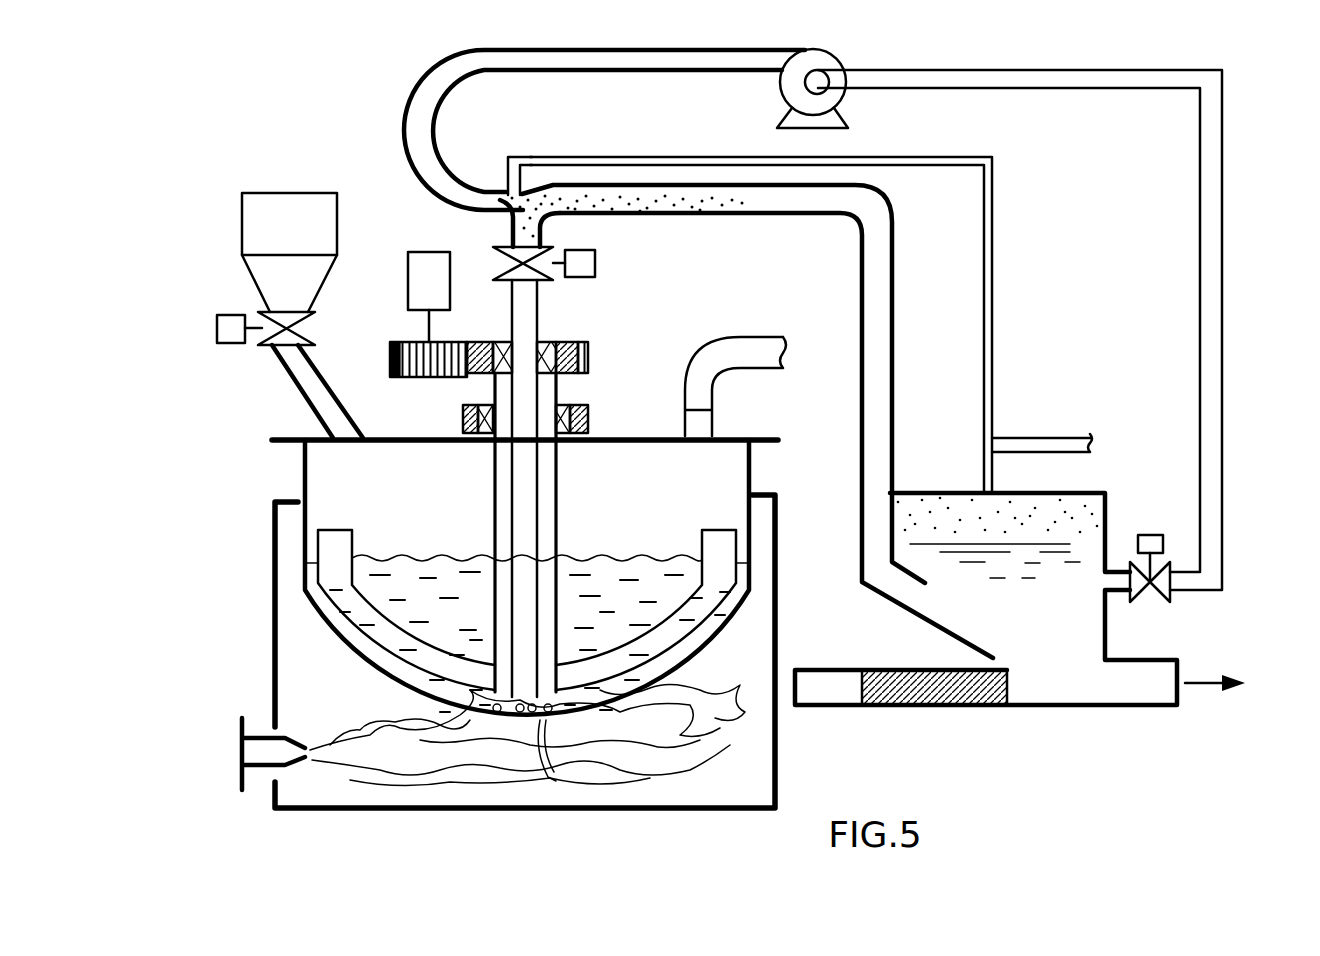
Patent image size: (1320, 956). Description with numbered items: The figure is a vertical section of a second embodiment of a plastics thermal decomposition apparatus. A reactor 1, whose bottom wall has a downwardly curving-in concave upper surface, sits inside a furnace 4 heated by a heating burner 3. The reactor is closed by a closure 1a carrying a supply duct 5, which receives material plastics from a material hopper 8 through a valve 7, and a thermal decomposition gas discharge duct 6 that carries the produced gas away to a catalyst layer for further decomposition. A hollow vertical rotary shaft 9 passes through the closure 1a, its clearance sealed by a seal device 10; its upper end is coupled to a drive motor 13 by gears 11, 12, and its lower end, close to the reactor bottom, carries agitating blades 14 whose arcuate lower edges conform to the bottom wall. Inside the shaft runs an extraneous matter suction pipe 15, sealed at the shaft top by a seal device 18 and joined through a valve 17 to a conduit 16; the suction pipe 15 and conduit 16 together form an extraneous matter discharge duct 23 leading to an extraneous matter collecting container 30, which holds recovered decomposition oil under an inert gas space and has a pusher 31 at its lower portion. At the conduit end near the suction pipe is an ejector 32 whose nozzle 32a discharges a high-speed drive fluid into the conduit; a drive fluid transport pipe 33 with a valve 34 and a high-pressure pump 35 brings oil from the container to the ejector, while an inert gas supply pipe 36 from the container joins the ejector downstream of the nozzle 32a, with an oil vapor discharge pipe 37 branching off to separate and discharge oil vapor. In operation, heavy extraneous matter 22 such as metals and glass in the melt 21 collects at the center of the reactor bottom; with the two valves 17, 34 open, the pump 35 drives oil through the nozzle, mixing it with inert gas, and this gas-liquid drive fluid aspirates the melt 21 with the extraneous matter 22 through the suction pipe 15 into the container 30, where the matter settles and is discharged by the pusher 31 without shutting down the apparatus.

The reactor 1 is at (293, 470).
The closure 1a is at (645, 435).
The heating burner 3 is at (256, 787).
The furnace 4 is at (388, 812).
The supply duct 5 is at (297, 383).
The thermal decomposition gas discharge duct 6 is at (697, 360).
The valve 7 is at (303, 335).
The material hopper 8 is at (340, 192).
The hollow vertical rotary shaft 9 is at (540, 490).
The seal device 10 is at (566, 403).
The gear 11 is at (570, 342).
The gear 12 is at (415, 380).
The drive motor 13 is at (429, 250).
The agitating blades 14 is at (355, 608).
The extraneous matter suction pipe 15 is at (494, 493).
The conduit 16 is at (700, 184).
The valve 17 is at (494, 263).
The seal device 18 is at (500, 342).
The melt 21 is at (625, 565).
The extraneous matter 22 is at (552, 768).
The extraneous matter discharge duct 23 is at (746, 216).
The extraneous matter collecting container 30 is at (940, 490).
The pusher 31 is at (806, 702).
The ejector 32 is at (497, 198).
The nozzle 32a is at (523, 196).
The drive fluid transport pipe 33 is at (1224, 252).
The valve 34 is at (1160, 602).
The high-pressure pump 35 is at (838, 53).
The inert gas supply pipe 36 is at (994, 177).
The oil vapor discharge pipe 37 is at (1020, 440).